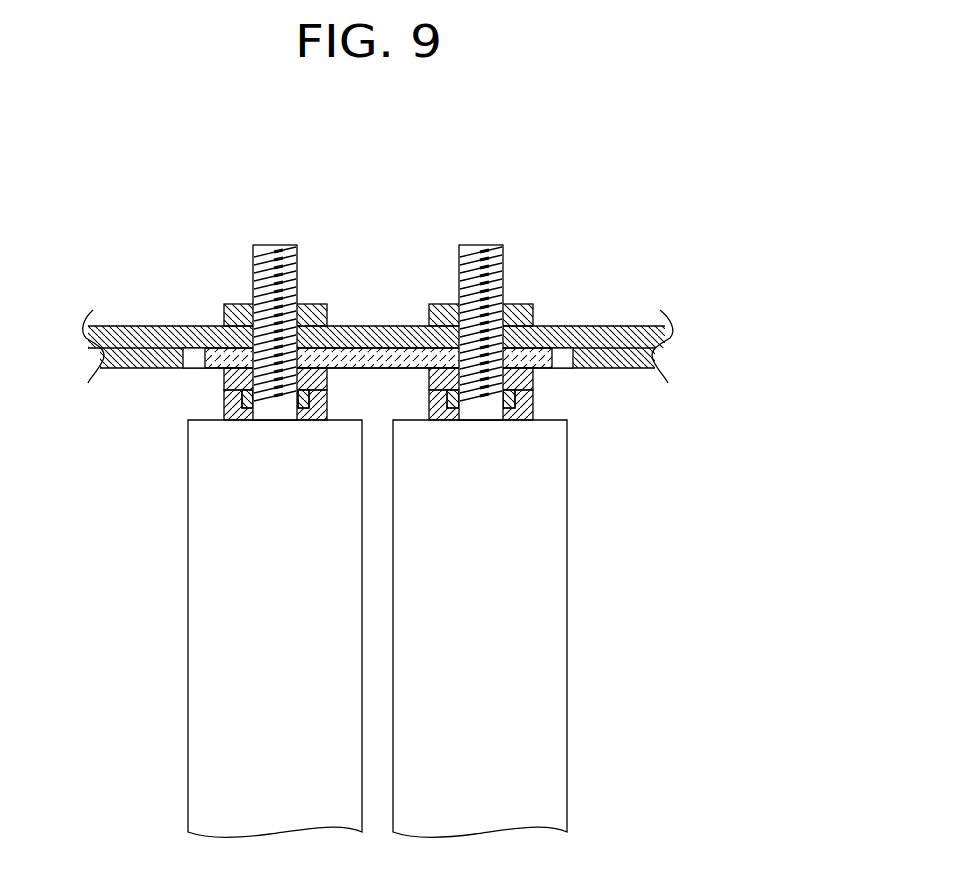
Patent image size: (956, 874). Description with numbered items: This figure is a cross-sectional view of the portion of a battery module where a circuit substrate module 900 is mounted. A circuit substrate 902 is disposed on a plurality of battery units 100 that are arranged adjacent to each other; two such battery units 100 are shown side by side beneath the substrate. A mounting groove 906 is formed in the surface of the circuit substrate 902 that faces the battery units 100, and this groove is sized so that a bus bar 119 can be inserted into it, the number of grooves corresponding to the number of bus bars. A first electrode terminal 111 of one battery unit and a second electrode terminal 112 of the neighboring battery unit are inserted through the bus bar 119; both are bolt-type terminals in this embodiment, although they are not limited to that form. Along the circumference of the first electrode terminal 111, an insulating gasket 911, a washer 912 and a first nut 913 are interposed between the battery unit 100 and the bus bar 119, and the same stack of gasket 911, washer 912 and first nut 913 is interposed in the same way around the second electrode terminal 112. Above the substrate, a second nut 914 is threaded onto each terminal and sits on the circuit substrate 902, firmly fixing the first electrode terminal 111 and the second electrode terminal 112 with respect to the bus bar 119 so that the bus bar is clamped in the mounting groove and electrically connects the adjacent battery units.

The circuit substrate module 900 is at (178, 197).
The battery unit 100 is at (294, 713).
The first electrode terminal 111 is at (275, 245).
The second electrode terminal 112 is at (481, 245).
The circuit substrate 902 is at (140, 337).
The bus bar 119 is at (380, 353).
The mounting groove 906 is at (566, 352).
The first nut 913 is at (228, 386).
The second nut 914 is at (243, 305).
The washer 912 is at (223, 398).
The gasket 911 is at (225, 410).